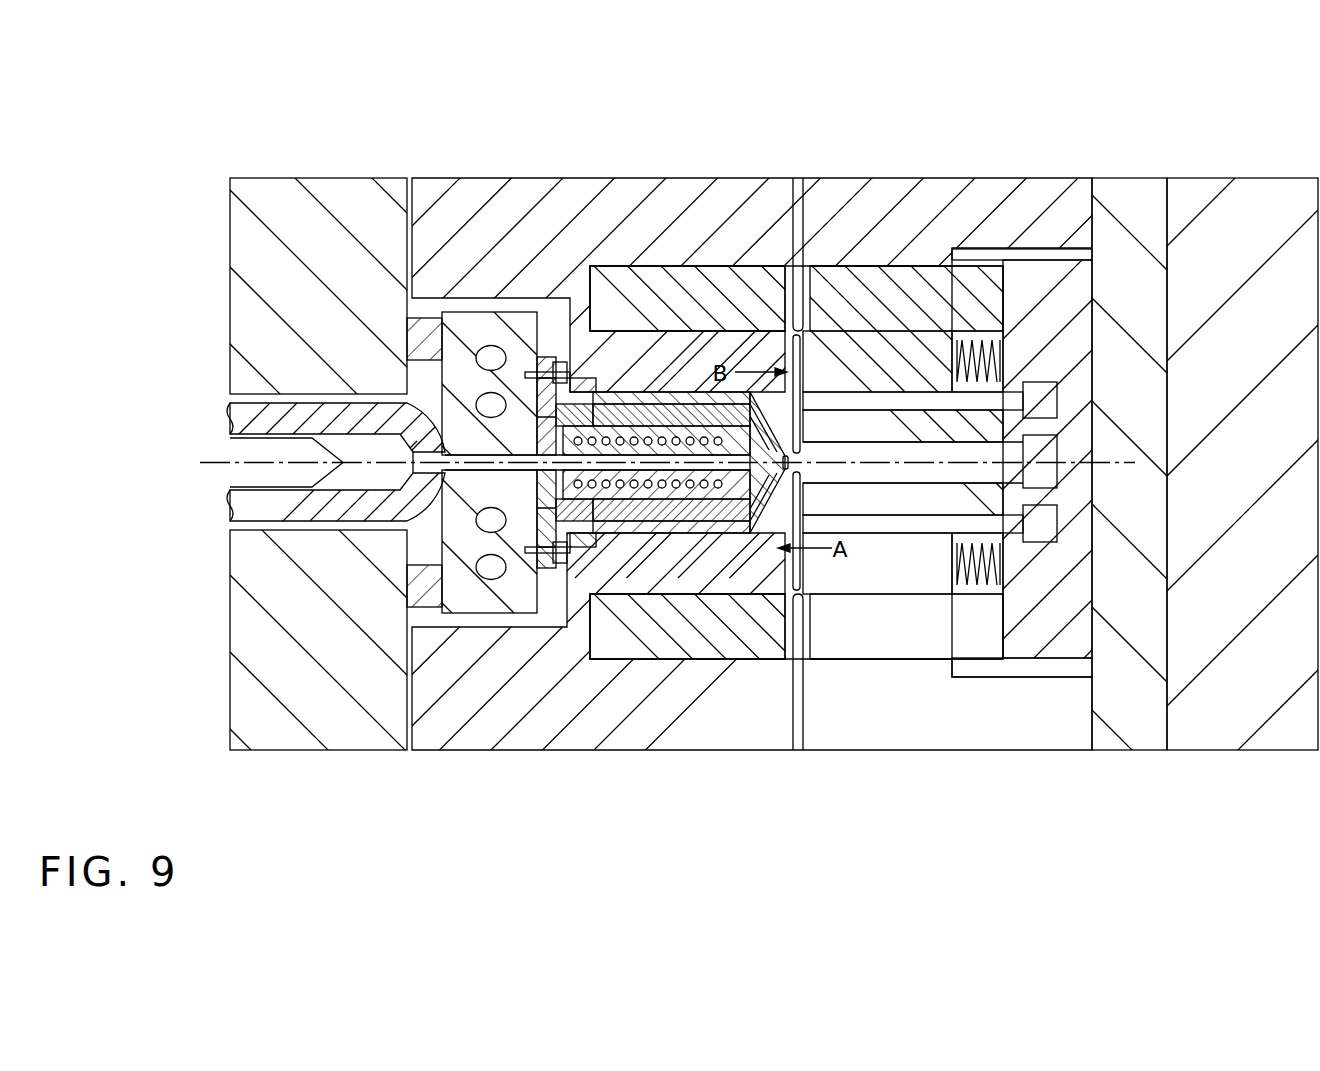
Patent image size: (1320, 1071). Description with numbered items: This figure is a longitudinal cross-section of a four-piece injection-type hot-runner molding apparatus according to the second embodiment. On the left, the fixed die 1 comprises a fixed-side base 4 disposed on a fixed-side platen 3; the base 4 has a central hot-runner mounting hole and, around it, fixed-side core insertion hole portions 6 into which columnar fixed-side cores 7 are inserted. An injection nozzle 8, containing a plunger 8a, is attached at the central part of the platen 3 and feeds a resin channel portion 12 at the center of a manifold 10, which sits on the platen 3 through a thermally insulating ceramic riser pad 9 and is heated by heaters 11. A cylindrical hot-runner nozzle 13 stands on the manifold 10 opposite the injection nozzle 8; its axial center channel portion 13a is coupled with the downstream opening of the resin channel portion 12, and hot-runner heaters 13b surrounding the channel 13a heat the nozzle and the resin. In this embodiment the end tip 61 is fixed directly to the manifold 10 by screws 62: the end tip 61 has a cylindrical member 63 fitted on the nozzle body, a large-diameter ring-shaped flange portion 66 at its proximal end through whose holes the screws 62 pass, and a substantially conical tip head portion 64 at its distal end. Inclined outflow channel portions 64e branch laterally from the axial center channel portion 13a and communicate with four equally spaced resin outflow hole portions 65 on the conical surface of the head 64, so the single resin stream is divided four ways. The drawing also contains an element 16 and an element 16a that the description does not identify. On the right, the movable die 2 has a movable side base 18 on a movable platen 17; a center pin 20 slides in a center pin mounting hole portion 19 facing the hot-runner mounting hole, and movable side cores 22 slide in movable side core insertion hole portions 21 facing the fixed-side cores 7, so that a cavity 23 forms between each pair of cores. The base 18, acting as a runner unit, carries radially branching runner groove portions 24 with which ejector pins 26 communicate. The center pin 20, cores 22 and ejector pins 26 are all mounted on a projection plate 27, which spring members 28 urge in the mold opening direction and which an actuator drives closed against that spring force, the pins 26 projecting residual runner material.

The fixed die 1 is at (705, 68).
The movable die 2 is at (1064, 90).
The fixed-side platen 3 is at (312, 192).
The fixed-side base 4 is at (630, 192).
The fixed-side core insertion hole portions 6 is at (668, 268).
The fixed-side cores 7 is at (733, 275).
The injection nozzle 8 is at (245, 429).
The plunger 8a is at (250, 474).
The riser pad 9 is at (436, 608).
The manifold 10 is at (466, 335).
The heaters 11 is at (490, 520).
The resin channel portion 12 is at (467, 460).
The hot-runner nozzle 13 is at (678, 533).
The axial center channel portion 13a is at (546, 562).
The hot-runner heaters 13b is at (583, 540).
The ball bearing 16 is at (660, 492).
The center channel 16a is at (858, 456).
The movable platen 17 is at (1252, 192).
The movable side base 18 is at (1140, 192).
The center pin mounting hole portion 19 is at (876, 524).
The center pin 20 is at (882, 380).
The movable side core insertion hole portions 21 is at (940, 300).
The movable side cores 22 is at (948, 292).
The cavity 23 is at (796, 300).
The runner groove portions 24 is at (805, 400).
The ejector pins 26 is at (905, 400).
The projection plate 27 is at (1070, 652).
The spring members 28 is at (975, 335).
The end tip 61 is at (748, 536).
The screws 62 is at (562, 372).
The cylindrical member 63 is at (615, 520).
The tip head portion 64 is at (782, 507).
The outflow channel portions 64e is at (722, 398).
The resin outflow hole portions 65 is at (768, 400).
The flange portion 66 is at (545, 362).